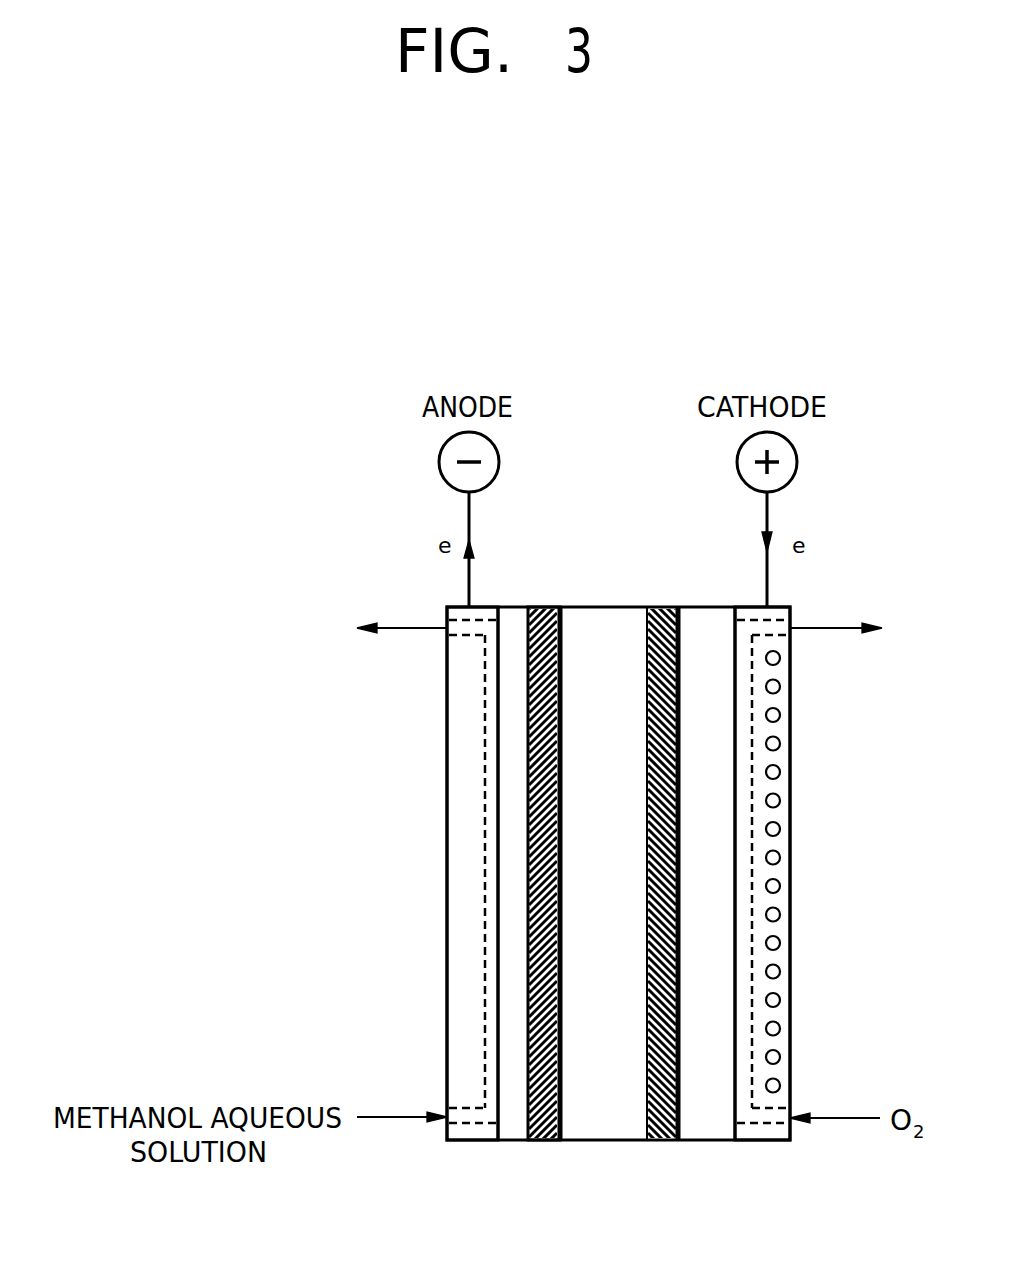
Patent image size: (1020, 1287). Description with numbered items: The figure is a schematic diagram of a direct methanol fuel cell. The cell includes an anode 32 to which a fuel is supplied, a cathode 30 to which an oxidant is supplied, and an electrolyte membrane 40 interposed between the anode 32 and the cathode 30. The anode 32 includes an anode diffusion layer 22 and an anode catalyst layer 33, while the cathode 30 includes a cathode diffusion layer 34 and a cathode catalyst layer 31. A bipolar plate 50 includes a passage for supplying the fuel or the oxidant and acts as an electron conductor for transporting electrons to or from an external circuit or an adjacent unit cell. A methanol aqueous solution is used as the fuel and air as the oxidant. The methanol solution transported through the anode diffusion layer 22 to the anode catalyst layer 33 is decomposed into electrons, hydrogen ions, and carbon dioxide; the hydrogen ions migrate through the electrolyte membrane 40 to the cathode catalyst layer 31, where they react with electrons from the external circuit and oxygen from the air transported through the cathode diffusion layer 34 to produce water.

The anode diffusion layer 22 is at (511, 757).
The cathode 30 is at (706, 597).
The cathode catalyst layer 31 is at (662, 1140).
The anode 32 is at (557, 597).
The anode catalyst layer 33 is at (543, 1140).
The cathode diffusion layer 34 is at (713, 758).
The electrolyte membrane 40 is at (468, 843).
The bipolar plate 50 is at (765, 845).